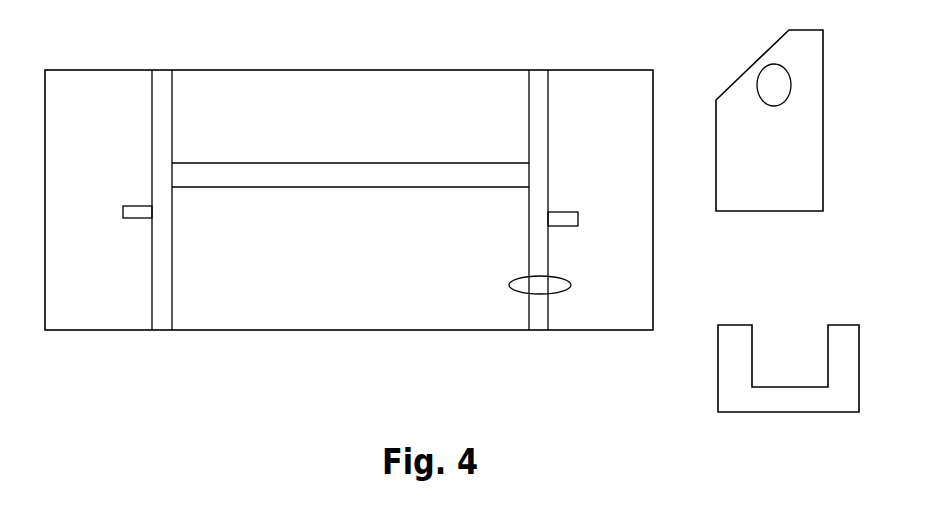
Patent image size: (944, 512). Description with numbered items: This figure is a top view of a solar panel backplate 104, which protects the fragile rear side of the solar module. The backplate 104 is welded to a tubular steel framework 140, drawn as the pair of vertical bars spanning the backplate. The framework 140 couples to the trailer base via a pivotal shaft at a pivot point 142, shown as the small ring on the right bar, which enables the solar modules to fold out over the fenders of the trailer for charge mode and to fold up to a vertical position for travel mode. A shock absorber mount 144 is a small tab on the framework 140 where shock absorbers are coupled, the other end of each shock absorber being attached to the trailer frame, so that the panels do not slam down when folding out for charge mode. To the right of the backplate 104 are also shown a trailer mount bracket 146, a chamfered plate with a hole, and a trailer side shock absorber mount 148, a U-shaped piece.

The solar panel backplate 104 is at (86, 95).
The tubular steel framework 140 is at (162, 313).
The pivot point 142 is at (539, 289).
The shock absorber mount 144 is at (132, 222).
The trailer mount bracket 146 is at (749, 195).
The trailer side shock absorber mount 148 is at (760, 403).